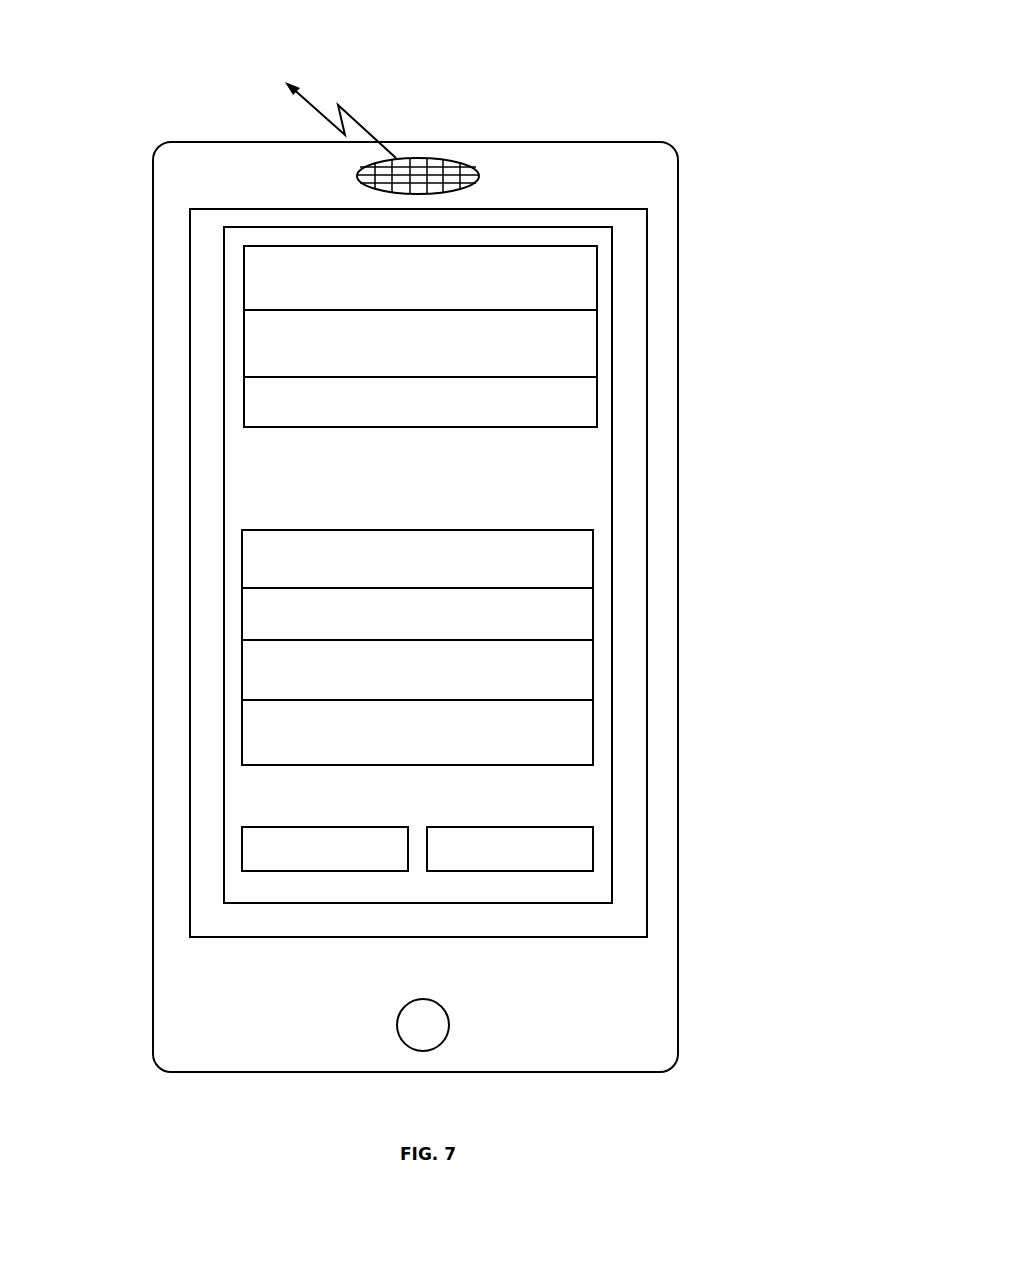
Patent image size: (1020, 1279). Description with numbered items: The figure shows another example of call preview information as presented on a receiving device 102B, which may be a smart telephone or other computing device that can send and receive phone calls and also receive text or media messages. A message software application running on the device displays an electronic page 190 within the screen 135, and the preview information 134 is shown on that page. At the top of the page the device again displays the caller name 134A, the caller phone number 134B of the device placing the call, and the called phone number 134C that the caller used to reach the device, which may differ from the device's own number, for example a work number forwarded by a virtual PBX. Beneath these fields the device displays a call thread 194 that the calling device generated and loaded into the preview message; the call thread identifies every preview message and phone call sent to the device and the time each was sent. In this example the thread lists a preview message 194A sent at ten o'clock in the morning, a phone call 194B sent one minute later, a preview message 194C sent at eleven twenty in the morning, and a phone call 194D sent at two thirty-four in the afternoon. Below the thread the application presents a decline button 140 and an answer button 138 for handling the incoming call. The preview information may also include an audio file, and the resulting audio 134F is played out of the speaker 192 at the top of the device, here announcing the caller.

The device 102B is at (678, 226).
The screen 135 is at (647, 311).
The electronic page 190 is at (612, 413).
The speaker 192 is at (425, 158).
The preview information 134 is at (110, 446).
The caller name 134A is at (244, 282).
The caller phone number 134B is at (244, 344).
The called phone number 134C is at (244, 403).
The audio 134F is at (342, 48).
The call thread 194 is at (503, 530).
The preview message 194A is at (242, 560).
The phone call 194B is at (242, 611).
The preview message 194C is at (242, 667).
The phone call 194D is at (242, 732).
The decline button 140 is at (275, 827).
The answer button 138 is at (460, 827).